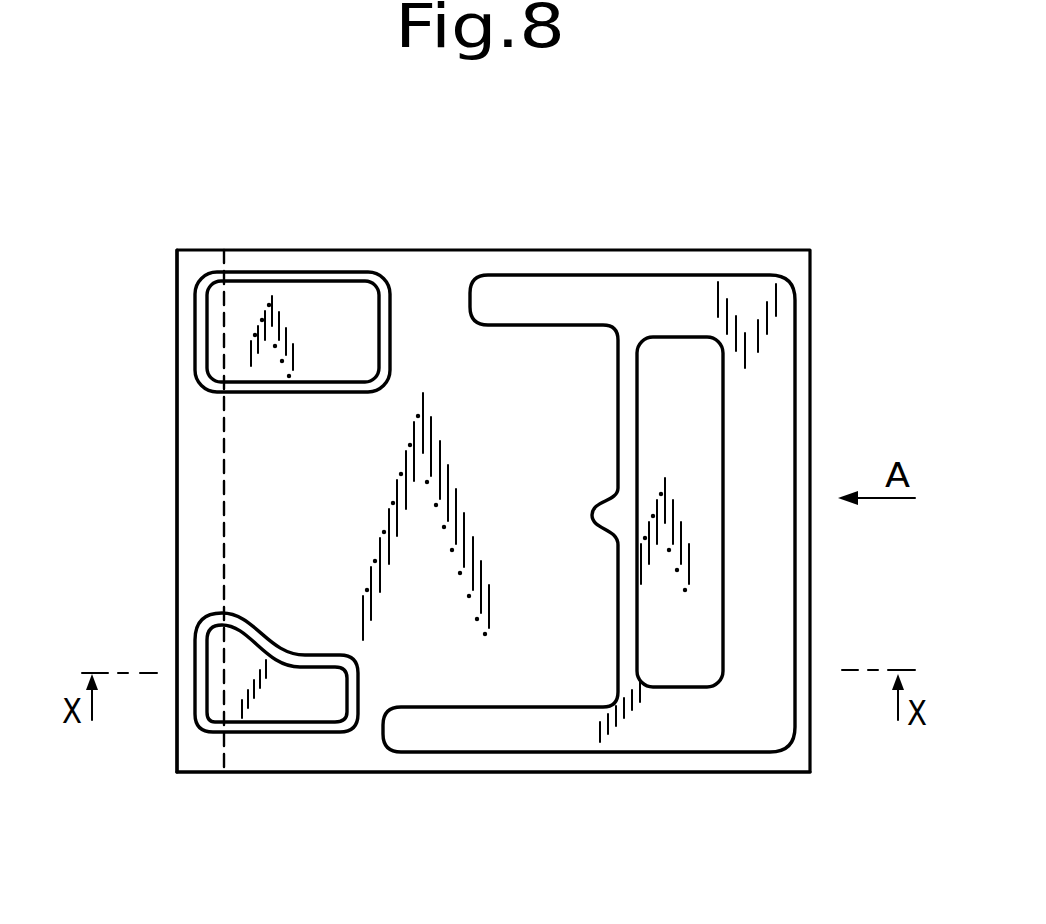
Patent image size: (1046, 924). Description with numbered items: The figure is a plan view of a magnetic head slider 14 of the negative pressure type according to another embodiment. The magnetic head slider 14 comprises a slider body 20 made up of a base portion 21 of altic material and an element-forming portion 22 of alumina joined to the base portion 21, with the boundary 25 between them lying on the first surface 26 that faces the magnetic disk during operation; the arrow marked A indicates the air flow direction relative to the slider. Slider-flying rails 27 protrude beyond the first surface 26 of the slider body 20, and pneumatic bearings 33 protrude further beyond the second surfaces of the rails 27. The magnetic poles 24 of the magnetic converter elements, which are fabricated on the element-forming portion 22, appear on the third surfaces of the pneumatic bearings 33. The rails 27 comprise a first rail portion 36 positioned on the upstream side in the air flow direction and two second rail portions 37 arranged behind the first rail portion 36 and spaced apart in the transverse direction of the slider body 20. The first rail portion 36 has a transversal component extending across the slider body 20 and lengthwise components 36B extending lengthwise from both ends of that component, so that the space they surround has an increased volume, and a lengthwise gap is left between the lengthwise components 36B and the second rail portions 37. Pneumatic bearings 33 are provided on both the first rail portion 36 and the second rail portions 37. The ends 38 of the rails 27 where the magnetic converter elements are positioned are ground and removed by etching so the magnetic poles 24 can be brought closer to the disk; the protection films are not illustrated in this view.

The magnetic head slider 14 is at (540, 208).
The slider body 20 is at (722, 251).
The base portion 21 is at (505, 774).
The element-forming portion 22 is at (197, 766).
The magnetic poles 24 is at (194, 659).
The boundary 25 is at (223, 470).
The first surface 26 is at (270, 518).
The slider-flying rails 27 is at (272, 274).
The pneumatic bearings 33 is at (328, 310).
The first rail portion 36 is at (762, 585).
The lengthwise components 36B is at (550, 297).
The second rail portions 37 is at (292, 515).
The ends 38 is at (203, 690).